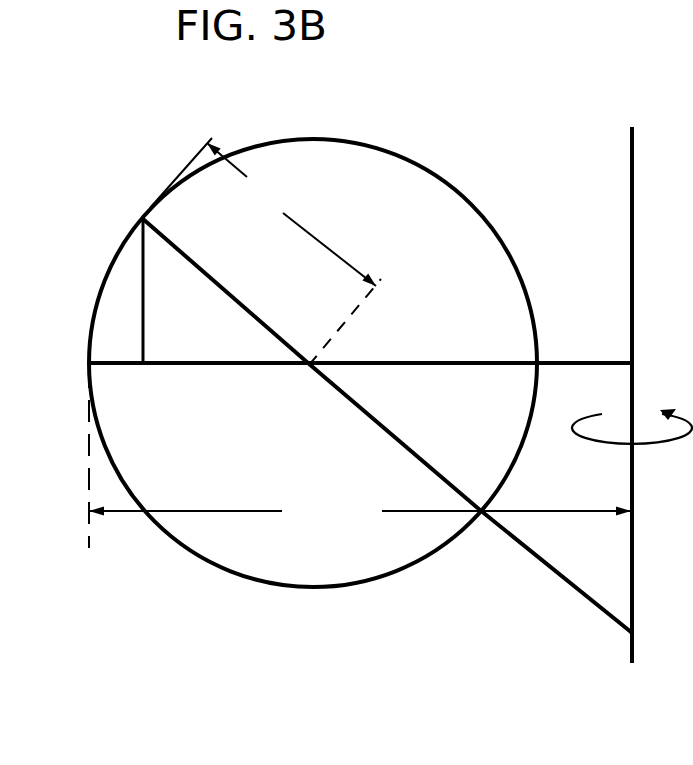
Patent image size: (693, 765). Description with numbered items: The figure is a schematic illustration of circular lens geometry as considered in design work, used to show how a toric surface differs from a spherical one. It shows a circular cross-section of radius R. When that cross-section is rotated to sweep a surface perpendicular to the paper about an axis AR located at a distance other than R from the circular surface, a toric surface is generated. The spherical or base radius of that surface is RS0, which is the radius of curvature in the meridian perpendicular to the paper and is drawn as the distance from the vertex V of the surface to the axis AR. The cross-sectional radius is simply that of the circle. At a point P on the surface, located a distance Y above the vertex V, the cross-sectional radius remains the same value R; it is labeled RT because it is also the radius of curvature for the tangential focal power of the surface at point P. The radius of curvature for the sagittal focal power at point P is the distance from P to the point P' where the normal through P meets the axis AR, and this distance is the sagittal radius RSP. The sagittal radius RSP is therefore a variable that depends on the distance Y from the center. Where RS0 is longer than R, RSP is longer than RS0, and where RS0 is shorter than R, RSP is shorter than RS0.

The vertex V is at (343, 443).
The axis AR is at (632, 364).
The distance above the vertex Y is at (158, 291).
The point P is at (159, 182).
The tangential radius RT is at (217, 283).
The radius R is at (294, 254).
The point P prime P' is at (654, 629).
The spherical or base radius RS0 is at (360, 520).
The sagittal radius RSP is at (149, 634).